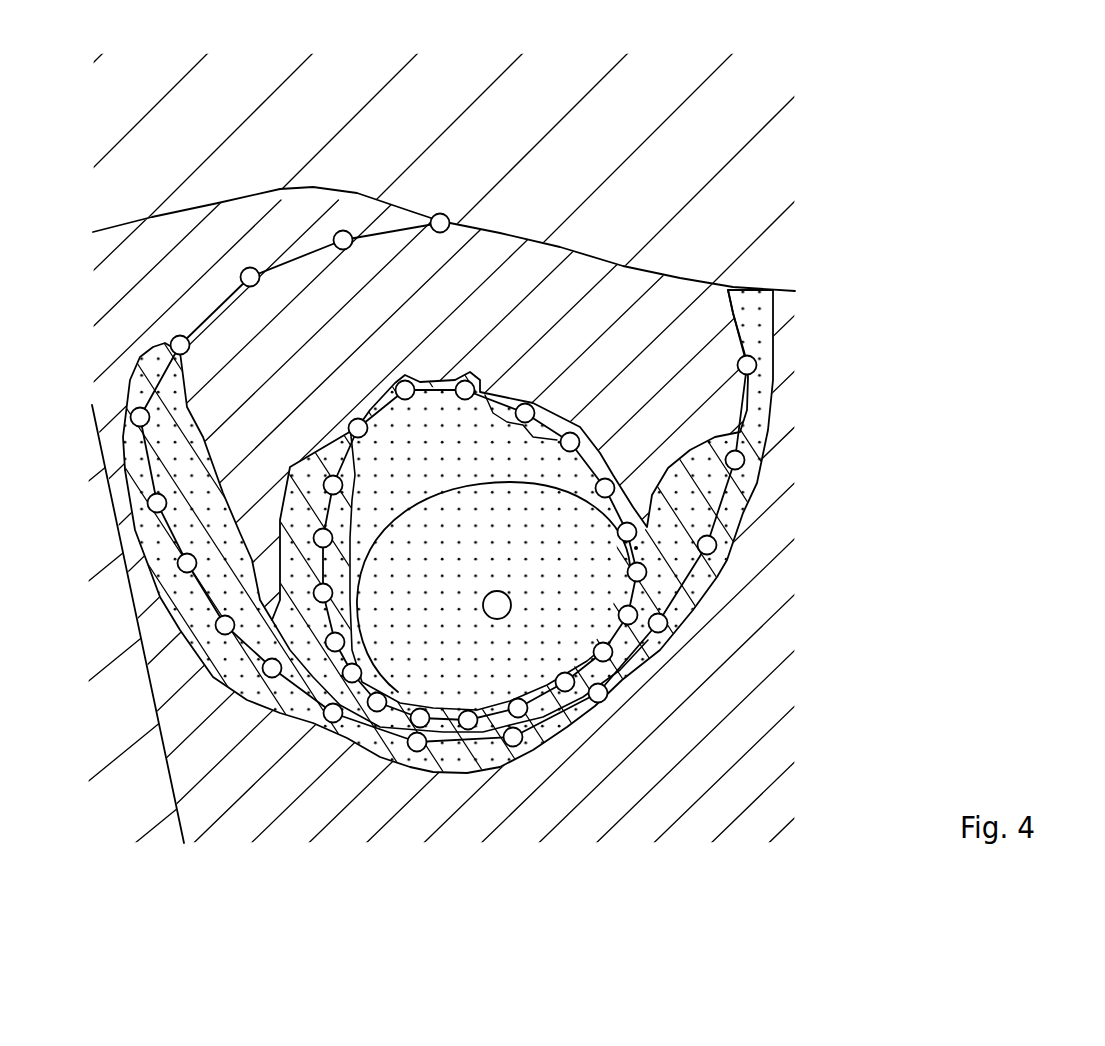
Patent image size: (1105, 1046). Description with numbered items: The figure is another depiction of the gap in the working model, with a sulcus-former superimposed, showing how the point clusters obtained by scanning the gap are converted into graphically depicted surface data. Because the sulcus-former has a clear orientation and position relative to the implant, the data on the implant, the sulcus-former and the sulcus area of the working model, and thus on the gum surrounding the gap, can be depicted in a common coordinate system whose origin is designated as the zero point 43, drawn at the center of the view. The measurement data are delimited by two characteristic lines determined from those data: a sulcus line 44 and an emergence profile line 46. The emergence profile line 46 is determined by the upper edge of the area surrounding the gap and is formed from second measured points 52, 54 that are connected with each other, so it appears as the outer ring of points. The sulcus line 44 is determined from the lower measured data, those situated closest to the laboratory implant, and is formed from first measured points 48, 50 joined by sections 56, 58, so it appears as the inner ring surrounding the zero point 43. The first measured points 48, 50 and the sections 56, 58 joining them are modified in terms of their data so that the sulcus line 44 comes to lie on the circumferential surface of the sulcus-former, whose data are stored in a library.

The zero point 43 is at (522, 606).
The sulcus line 44 is at (645, 530).
The emergence profile line 46 is at (770, 367).
The measurement point 48 is at (648, 572).
The measurement point 50 is at (645, 524).
The measurement point 52 is at (745, 460).
The measurement point 54 is at (763, 357).
The section 56 is at (640, 547).
The section 58 is at (645, 640).